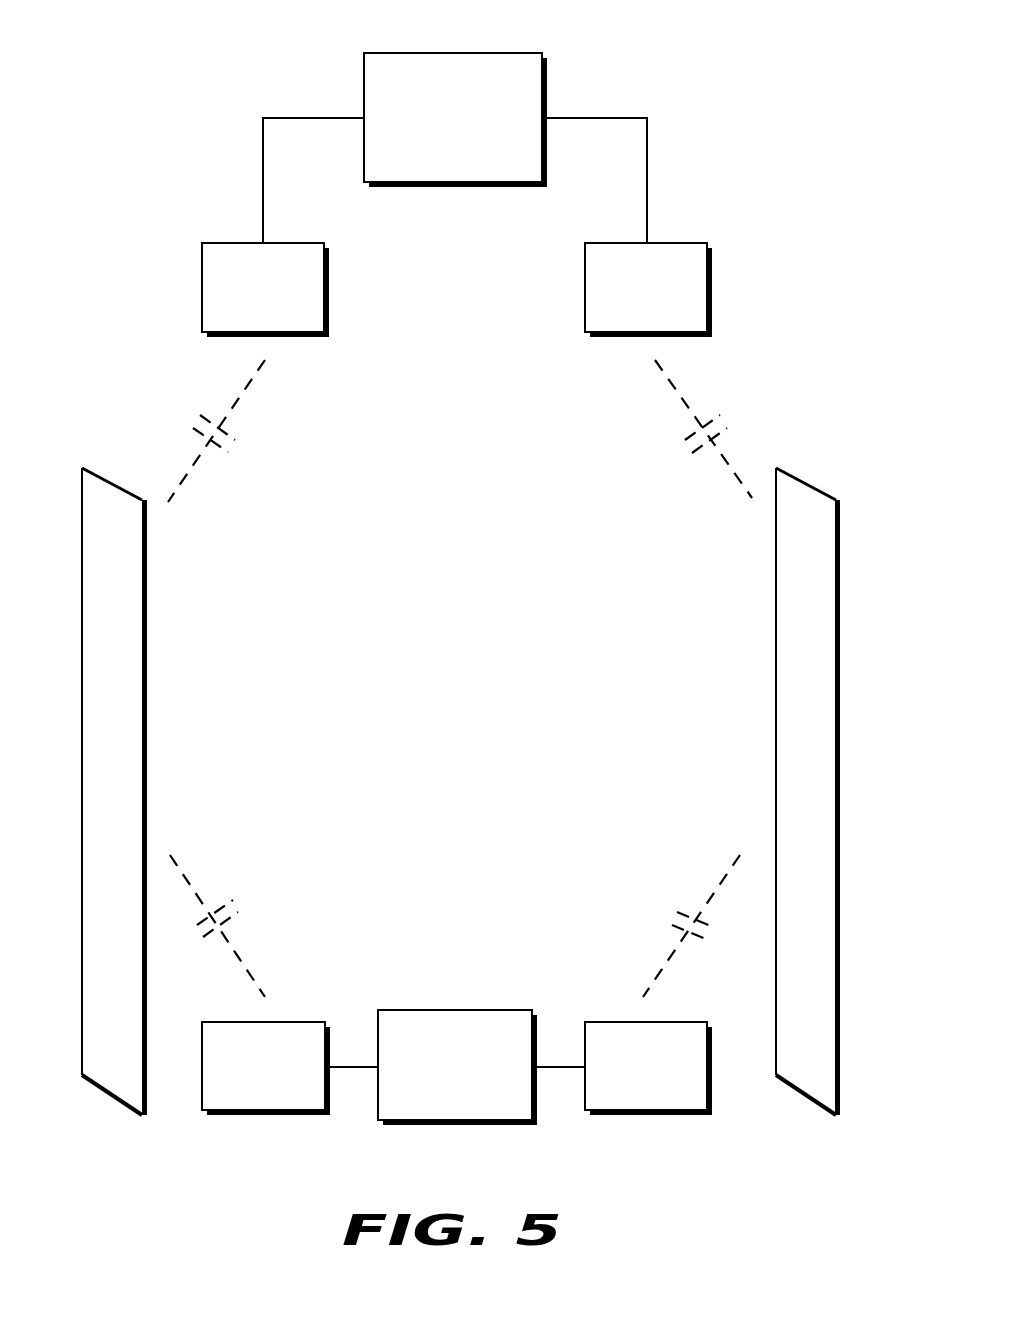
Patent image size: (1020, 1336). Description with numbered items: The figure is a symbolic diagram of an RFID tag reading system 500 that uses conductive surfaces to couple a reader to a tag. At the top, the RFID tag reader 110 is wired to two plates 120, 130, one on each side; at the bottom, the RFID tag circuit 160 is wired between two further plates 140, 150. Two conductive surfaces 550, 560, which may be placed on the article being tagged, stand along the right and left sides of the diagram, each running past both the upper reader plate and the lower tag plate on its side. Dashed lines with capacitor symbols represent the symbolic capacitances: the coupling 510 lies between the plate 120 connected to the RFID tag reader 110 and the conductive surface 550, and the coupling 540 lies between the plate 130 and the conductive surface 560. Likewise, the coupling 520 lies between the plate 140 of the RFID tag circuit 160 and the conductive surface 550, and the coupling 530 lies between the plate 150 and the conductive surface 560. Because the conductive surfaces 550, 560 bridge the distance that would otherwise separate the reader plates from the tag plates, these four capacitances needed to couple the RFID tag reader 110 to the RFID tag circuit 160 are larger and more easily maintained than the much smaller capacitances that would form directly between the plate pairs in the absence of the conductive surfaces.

The RFID tag reading system 500 is at (728, 41).
The RFID tag reader 110 is at (453, 53).
The plate 120 is at (671, 243).
The plate 130 is at (238, 243).
The plate 140 is at (652, 1113).
The plate 150 is at (262, 1113).
The RFID tag circuit 160 is at (457, 1122).
The capacitive coupling c3 510 is at (685, 445).
The capacitive coupling c4 520 is at (685, 913).
The capacitive coupling c4' 530 is at (235, 908).
The capacitive coupling c3' 540 is at (235, 447).
The conductive surface 550 is at (776, 718).
The conductive surface 560 is at (147, 718).